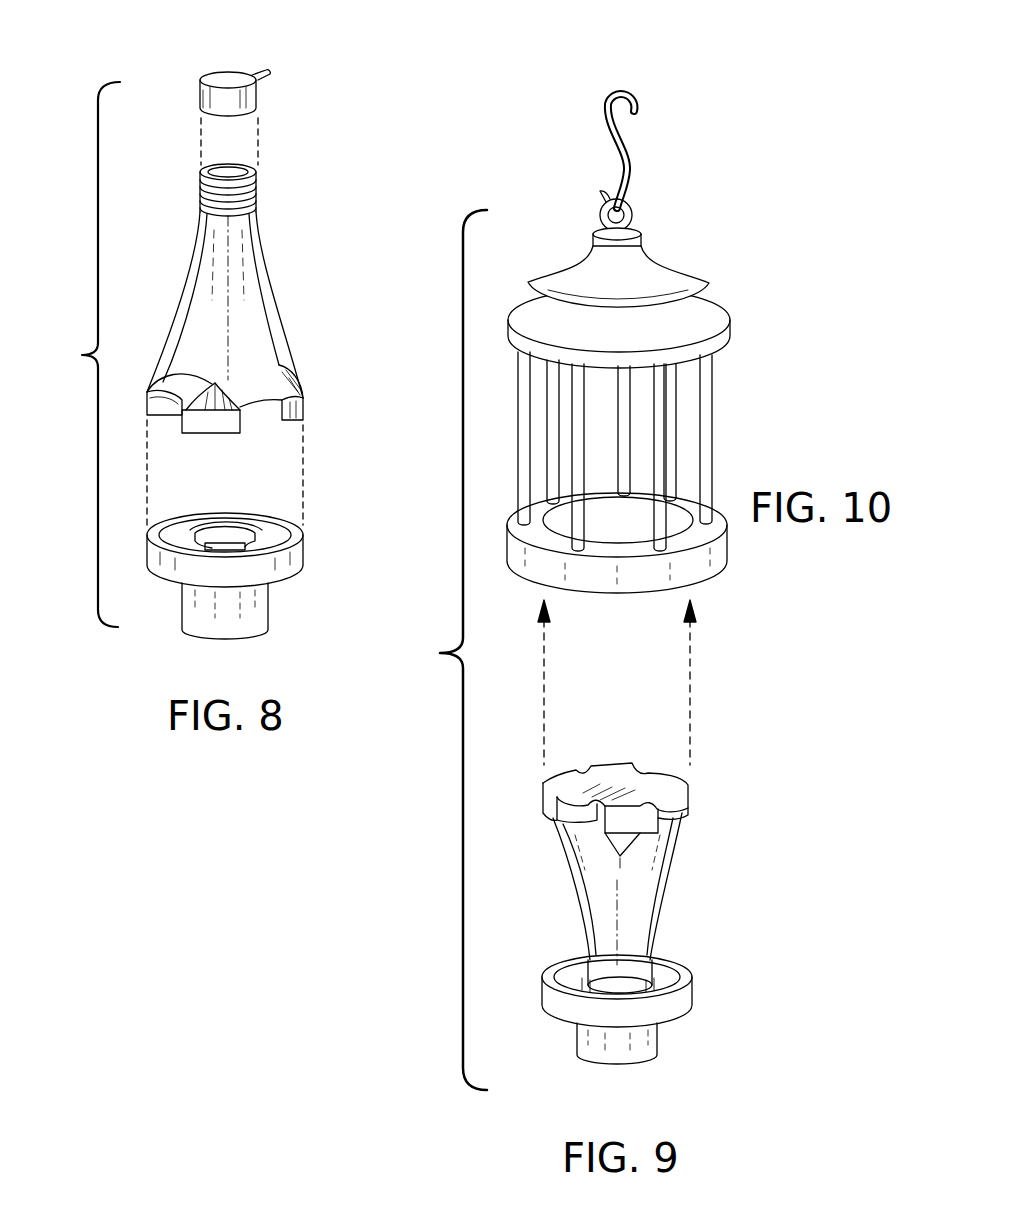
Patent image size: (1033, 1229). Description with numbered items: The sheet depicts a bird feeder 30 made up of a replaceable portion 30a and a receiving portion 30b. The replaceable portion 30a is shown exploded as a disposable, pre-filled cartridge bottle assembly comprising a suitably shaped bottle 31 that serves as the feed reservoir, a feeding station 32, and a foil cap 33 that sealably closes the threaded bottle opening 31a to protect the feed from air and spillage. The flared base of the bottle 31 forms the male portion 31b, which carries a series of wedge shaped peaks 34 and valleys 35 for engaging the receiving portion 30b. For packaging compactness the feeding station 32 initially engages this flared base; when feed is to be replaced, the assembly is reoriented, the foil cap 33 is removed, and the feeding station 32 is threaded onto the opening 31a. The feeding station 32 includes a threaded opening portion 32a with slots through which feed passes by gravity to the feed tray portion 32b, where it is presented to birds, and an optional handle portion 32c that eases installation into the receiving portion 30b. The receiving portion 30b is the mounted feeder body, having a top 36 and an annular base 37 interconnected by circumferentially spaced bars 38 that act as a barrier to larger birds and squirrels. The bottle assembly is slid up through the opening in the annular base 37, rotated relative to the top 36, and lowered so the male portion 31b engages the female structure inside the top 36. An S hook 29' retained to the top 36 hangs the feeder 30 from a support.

In FIG. 10, the S hook 29' is at (650, 157).
In FIG. 9, the bird feeder 30 is at (446, 650).
In FIG. 8, the replaceable portion 30a is at (82, 355).
In FIG. 9, the replaceable portion 30a is at (745, 813).
In FIG. 10, the receiving portion 30b is at (742, 268).
In FIG. 8, the bottle 31 is at (250, 282).
In FIG. 9, the bottle 31 is at (668, 875).
In FIG. 8, the bottle opening 31a is at (247, 170).
In FIG. 8, the male portion 31b is at (214, 431).
In FIG. 9, the male portion 31b is at (680, 784).
In FIG. 8, the feeding station 32 is at (205, 576).
In FIG. 9, the feeding station 32 is at (680, 1000).
In FIG. 8, the threaded opening portion 32a is at (195, 532).
In FIG. 8, the feed tray portion 32b is at (190, 548).
In FIG. 8, the handle portion 32c is at (258, 620).
In FIG. 8, the foil cap 33 is at (218, 80).
In FIG. 8, the wedge shaped peaks 34 is at (188, 378).
In FIG. 8, the valleys 35 is at (147, 400).
In FIG. 10, the top 36 is at (668, 268).
In FIG. 10, the annular base 37 is at (712, 553).
In FIG. 10, the bars 38 is at (580, 467).